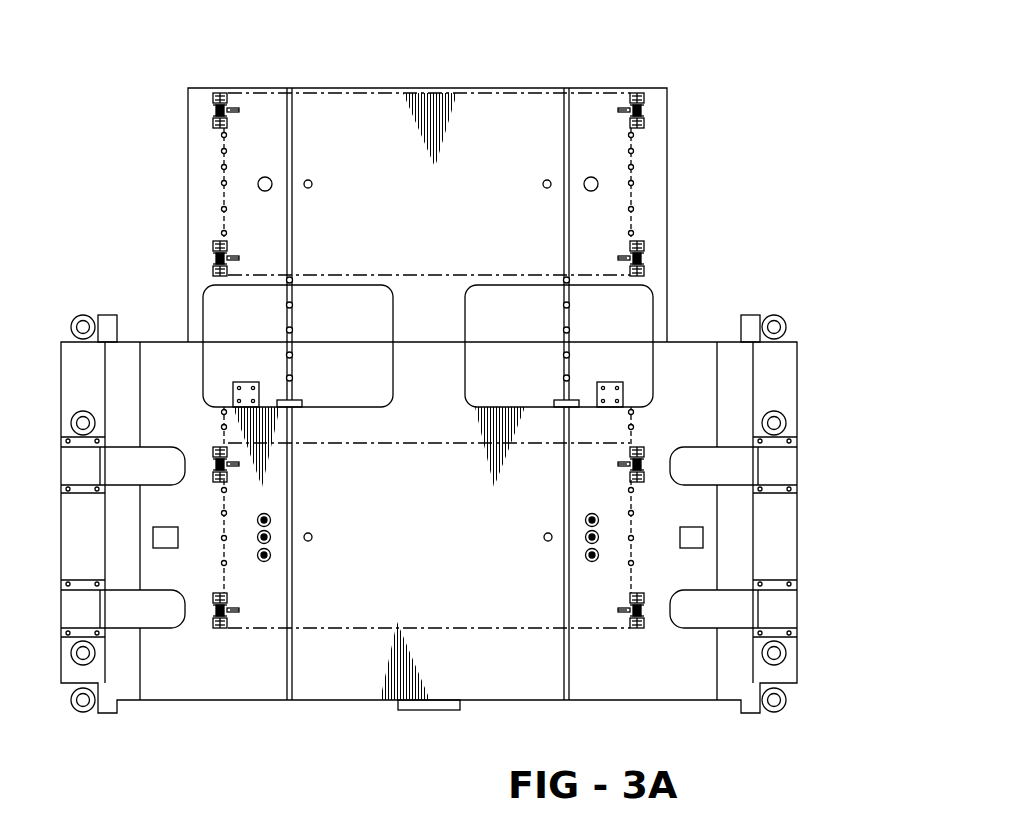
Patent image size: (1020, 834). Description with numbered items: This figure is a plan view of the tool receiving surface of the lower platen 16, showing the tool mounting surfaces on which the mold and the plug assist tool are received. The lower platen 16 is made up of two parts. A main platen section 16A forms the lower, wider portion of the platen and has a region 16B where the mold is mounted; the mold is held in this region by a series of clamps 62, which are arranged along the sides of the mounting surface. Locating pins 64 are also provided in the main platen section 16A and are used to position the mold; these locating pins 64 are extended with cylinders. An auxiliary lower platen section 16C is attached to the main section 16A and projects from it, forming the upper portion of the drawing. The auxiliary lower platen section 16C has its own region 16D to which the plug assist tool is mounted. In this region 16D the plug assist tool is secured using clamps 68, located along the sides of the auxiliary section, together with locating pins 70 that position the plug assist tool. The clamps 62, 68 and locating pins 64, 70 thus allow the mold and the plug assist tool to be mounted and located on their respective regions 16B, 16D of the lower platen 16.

The lower platen 16 is at (152, 321).
The main platen section 16A is at (233, 687).
The region 16B is at (607, 400).
The auxiliary lower platen section 16C is at (198, 108).
The region 16D is at (518, 166).
The clamps 62 is at (703, 727).
The locating pins 64 is at (312, 537).
The clamps 68 is at (227, 94).
The locating pins 70 is at (312, 182).